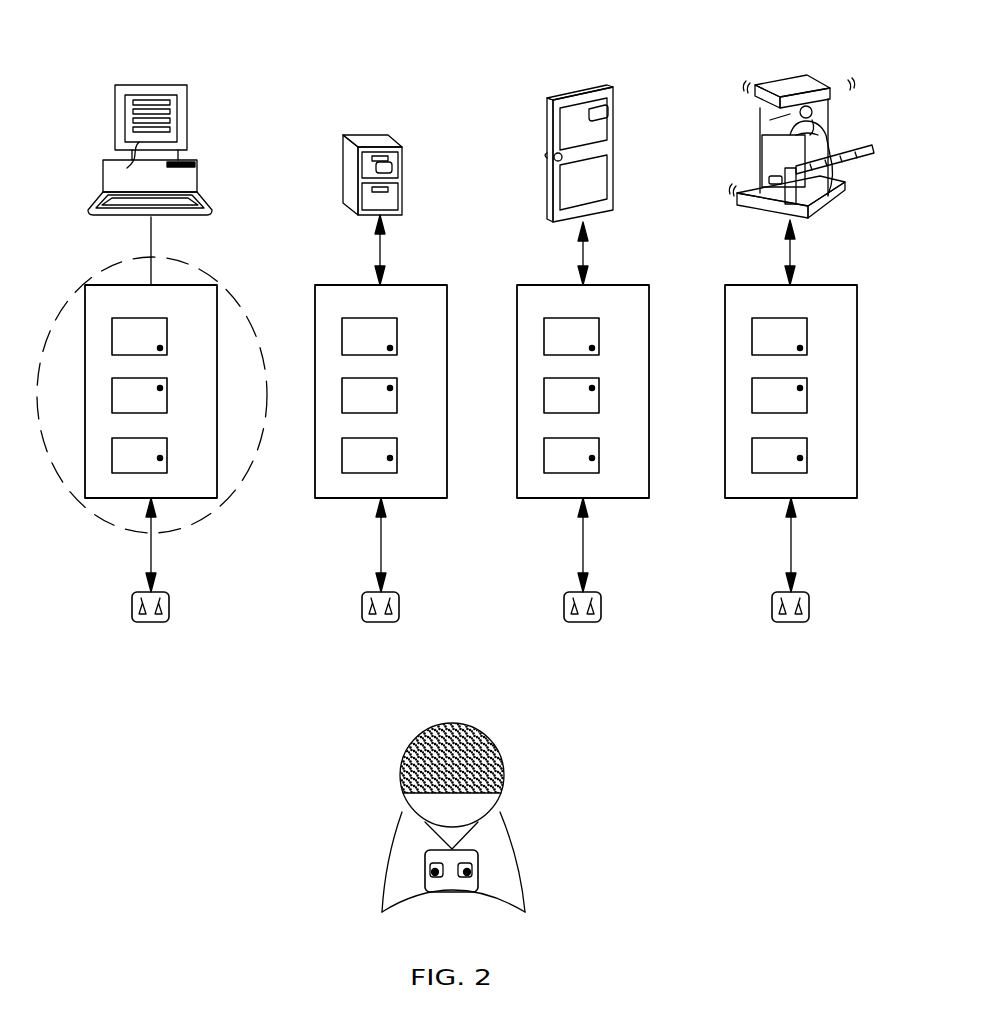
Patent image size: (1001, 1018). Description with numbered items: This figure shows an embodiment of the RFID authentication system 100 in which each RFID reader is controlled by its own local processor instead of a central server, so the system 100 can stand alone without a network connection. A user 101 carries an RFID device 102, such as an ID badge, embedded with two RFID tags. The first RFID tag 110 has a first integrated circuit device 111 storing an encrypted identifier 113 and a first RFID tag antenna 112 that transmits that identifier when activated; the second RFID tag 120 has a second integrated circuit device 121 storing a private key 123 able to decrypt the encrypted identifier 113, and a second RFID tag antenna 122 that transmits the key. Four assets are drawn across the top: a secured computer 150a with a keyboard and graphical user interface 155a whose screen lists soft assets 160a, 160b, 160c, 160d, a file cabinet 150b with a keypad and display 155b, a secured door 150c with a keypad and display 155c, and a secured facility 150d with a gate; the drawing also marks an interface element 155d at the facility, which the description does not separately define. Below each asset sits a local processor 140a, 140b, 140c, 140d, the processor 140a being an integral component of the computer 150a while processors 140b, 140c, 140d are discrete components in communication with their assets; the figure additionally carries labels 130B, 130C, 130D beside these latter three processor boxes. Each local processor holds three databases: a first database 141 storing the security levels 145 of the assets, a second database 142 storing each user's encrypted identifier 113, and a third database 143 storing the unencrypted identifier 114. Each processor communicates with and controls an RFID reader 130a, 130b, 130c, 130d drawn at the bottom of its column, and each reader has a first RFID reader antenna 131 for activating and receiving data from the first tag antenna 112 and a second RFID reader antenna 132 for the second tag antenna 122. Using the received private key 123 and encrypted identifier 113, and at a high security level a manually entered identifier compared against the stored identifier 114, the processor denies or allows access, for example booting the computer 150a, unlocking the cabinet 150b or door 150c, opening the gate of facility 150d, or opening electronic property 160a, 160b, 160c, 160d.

The RFID authentication system 100 is at (126, 54).
The user 101 is at (500, 762).
The RFID device 102 is at (478, 852).
The first RFID tag 110 is at (470, 894).
The first integrated circuit device 111 is at (472, 875).
The first RFID tag antenna 112 is at (478, 866).
The encrypted identifier 113 is at (160, 388).
The unencrypted identifier 114 is at (160, 458).
The second RFID tag 120 is at (437, 893).
The second integrated circuit device 121 is at (430, 870).
The second RFID tag antenna 122 is at (440, 858).
The private key 123 is at (434, 872).
The RFID reader 130a is at (151, 622).
The RFID reader 130b is at (381, 634).
The RFID reader 130c is at (583, 634).
The RFID reader 130d is at (791, 634).
The computing device 130B is at (423, 498).
The computing device 130C is at (626, 498).
The computing device 130D is at (833, 498).
The first RFID reader antenna 131 is at (168, 608).
The second RFID reader antenna 132 is at (133, 609).
The local processor 140a is at (85, 414).
The local processor 140b is at (315, 414).
The local processor 140c is at (517, 414).
The local processor 140d is at (725, 414).
The first database 141 is at (156, 350).
The second database 142 is at (156, 409).
The third database 143 is at (156, 469).
The security levels 145 is at (160, 348).
The secured computer 150a is at (115, 110).
The file cabinet 150b is at (343, 153).
The secured door 150c is at (548, 108).
The secured facility 150d is at (760, 140).
The keyboard and graphical user interface 155a is at (127, 168).
The keypad and display 155b is at (392, 167).
The keypad and display 155c is at (598, 106).
The sensor 155d is at (769, 179).
The soft asset 160a is at (170, 102).
The soft asset 160b is at (170, 111).
The soft asset 160c is at (170, 120).
The soft asset 160d is at (170, 129).